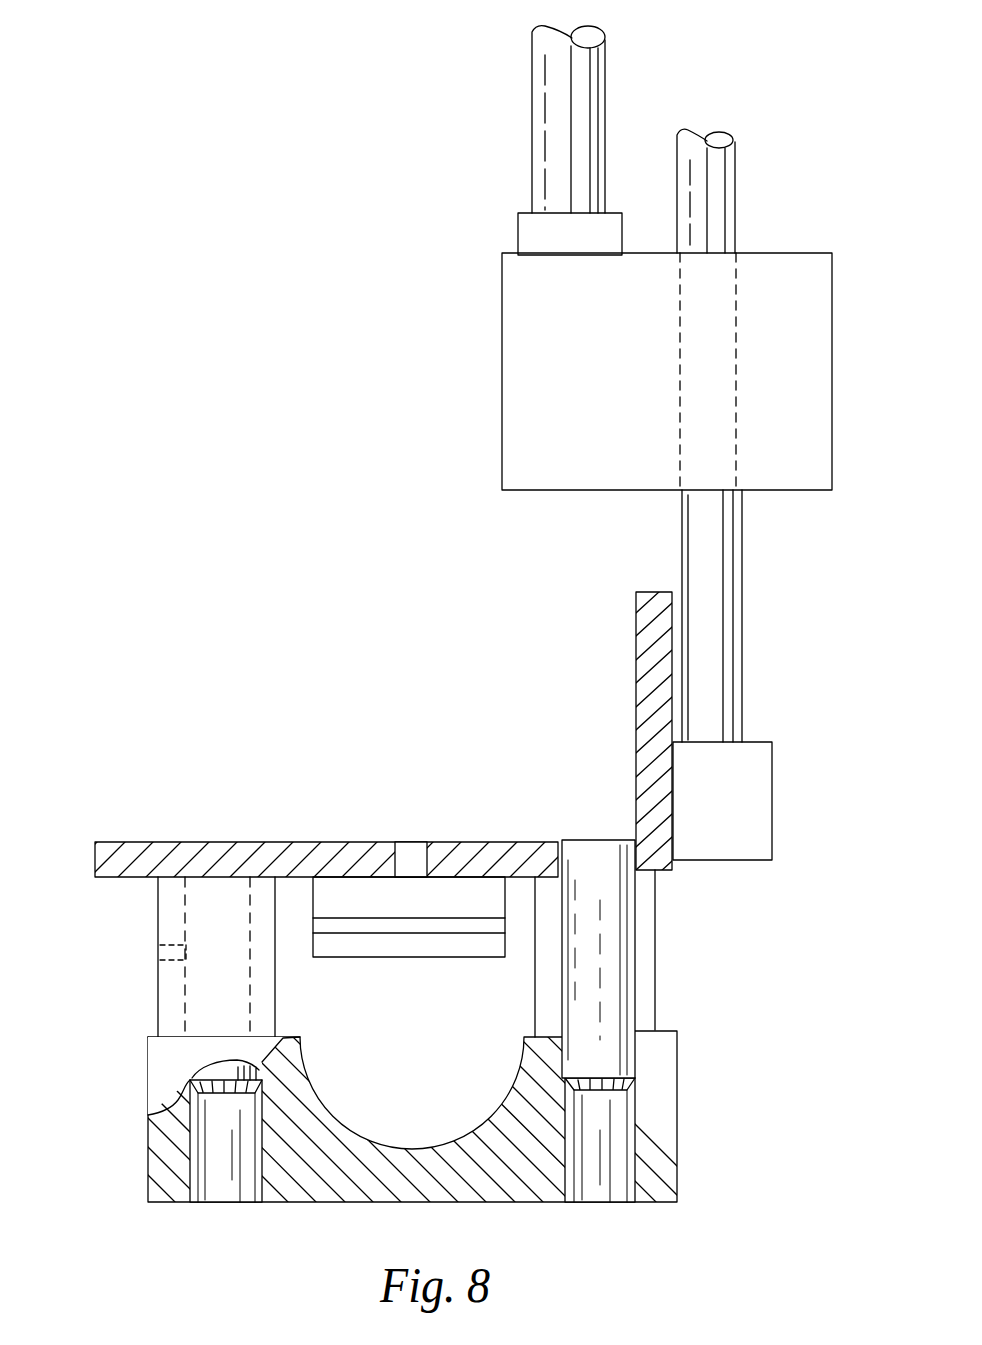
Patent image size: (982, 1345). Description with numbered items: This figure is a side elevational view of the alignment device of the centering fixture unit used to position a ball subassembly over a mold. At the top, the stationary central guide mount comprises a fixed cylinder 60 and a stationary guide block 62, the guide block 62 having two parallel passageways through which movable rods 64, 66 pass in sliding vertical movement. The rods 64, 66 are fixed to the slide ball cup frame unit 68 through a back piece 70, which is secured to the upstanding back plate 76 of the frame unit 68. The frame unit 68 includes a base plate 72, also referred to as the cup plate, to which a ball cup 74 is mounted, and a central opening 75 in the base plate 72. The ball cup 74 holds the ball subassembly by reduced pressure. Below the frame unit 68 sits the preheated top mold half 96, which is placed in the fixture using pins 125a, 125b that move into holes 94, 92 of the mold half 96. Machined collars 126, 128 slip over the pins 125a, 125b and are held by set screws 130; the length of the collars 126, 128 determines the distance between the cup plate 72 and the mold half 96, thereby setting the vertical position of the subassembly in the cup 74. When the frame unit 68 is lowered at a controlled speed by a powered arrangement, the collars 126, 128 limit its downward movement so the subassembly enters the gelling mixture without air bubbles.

The fixed cylinder 60 is at (553, 102).
The stationary guide block 62 is at (621, 382).
The movable rod 64 is at (718, 181).
The movable rod 66 is at (709, 435).
The slide ball cup frame unit 68 is at (150, 684).
The back piece 70 is at (734, 806).
The base plate 72 is at (210, 850).
The ball cup 74 is at (392, 958).
The central opening 75 is at (412, 852).
The upstanding back plate 76 is at (652, 668).
The hole 92 is at (215, 1128).
The hole 94 is at (612, 1133).
The top mold half 96 is at (668, 1070).
The pin 125a is at (610, 970).
The pin 125b is at (212, 1075).
The machined collar 126 is at (645, 912).
The machined collar 128 is at (172, 922).
The set screw 130 is at (150, 956).